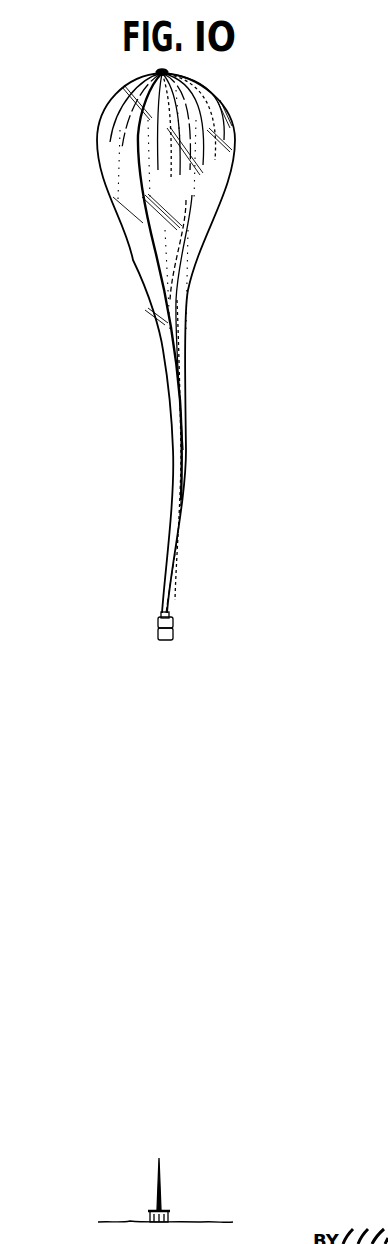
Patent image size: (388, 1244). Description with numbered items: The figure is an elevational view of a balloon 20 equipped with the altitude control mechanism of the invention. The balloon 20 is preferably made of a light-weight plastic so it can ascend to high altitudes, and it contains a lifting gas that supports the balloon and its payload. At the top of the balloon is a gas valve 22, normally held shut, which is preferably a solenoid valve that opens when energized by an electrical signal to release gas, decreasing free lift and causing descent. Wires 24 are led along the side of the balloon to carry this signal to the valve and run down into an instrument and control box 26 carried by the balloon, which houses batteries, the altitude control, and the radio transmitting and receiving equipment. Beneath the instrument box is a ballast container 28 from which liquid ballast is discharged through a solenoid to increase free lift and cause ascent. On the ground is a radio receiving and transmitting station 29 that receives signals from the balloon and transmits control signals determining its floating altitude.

The balloon 20 is at (225, 175).
The gas valve 22 is at (157, 72).
The wires 24 is at (182, 425).
The instrument and control box 26 is at (158, 623).
The ballast container 28 is at (168, 633).
The radio receiving and transmitting station 29 is at (168, 1210).